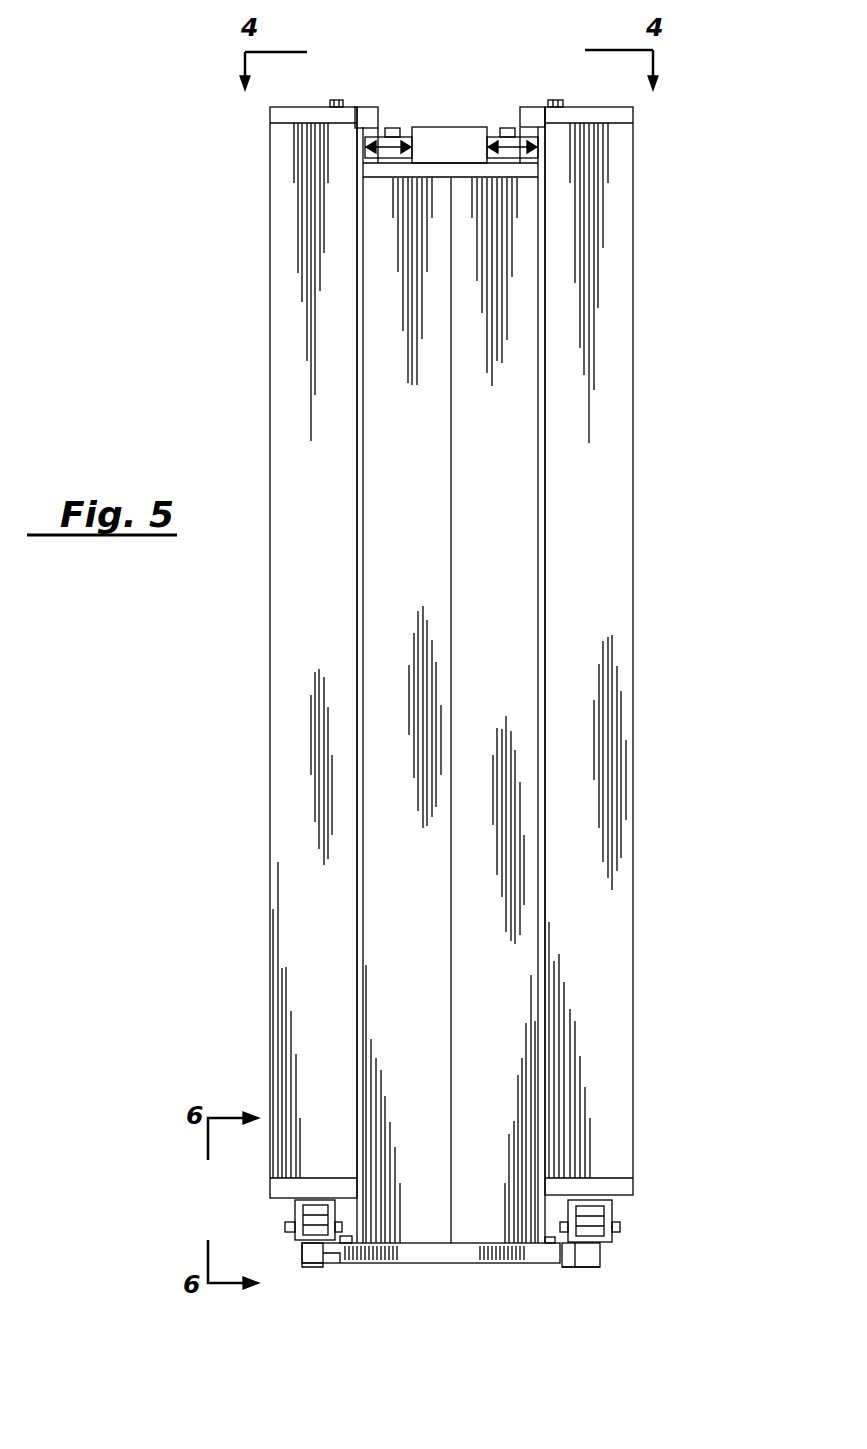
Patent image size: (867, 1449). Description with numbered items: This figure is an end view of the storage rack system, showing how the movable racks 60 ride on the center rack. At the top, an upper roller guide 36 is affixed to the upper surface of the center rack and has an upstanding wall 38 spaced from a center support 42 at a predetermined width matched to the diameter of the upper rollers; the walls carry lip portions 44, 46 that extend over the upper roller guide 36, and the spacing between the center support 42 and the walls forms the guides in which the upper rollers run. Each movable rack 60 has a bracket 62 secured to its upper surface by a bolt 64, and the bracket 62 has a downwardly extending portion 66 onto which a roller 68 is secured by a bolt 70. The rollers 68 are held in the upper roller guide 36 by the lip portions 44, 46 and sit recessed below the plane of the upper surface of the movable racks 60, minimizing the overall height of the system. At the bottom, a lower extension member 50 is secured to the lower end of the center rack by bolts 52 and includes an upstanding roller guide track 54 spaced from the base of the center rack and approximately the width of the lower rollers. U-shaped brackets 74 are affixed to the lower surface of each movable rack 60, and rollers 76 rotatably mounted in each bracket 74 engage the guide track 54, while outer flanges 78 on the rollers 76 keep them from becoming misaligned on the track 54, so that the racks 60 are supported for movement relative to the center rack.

The upper roller guide 36 is at (437, 108).
The upstanding wall 38 is at (360, 140).
The center support 42 is at (467, 123).
The lip portion 44 is at (367, 127).
The lip portion 46 is at (527, 127).
The lower extension member 50 is at (329, 1272).
The bolt 52 is at (371, 1263).
The upstanding roller guide track 54 is at (302, 1255).
The movable rack 60 is at (250, 267).
The bracket 62 is at (372, 107).
The bolt 64 is at (333, 101).
The downwardly extending portion 66 is at (390, 128).
The roller 68 is at (377, 182).
The bolt 70 is at (387, 128).
The U-shaped bracket 74 is at (295, 1205).
The roller 76 is at (312, 1260).
The outer flange 78 is at (292, 1232).